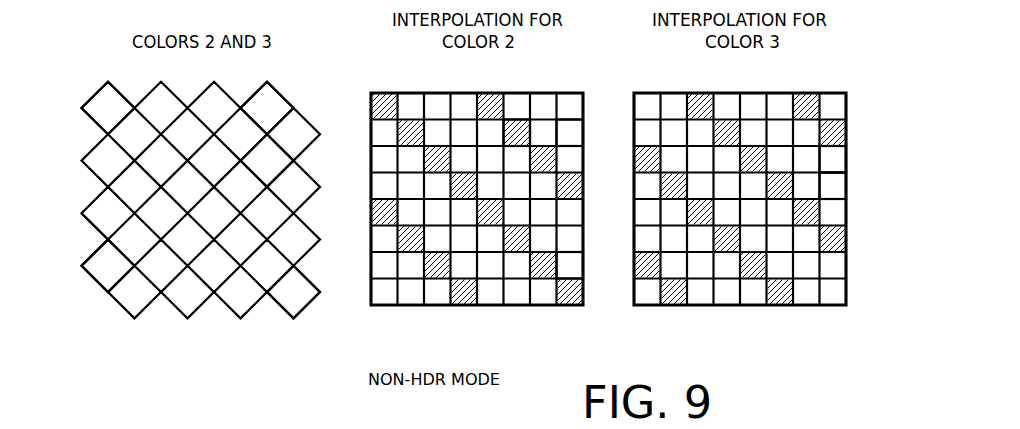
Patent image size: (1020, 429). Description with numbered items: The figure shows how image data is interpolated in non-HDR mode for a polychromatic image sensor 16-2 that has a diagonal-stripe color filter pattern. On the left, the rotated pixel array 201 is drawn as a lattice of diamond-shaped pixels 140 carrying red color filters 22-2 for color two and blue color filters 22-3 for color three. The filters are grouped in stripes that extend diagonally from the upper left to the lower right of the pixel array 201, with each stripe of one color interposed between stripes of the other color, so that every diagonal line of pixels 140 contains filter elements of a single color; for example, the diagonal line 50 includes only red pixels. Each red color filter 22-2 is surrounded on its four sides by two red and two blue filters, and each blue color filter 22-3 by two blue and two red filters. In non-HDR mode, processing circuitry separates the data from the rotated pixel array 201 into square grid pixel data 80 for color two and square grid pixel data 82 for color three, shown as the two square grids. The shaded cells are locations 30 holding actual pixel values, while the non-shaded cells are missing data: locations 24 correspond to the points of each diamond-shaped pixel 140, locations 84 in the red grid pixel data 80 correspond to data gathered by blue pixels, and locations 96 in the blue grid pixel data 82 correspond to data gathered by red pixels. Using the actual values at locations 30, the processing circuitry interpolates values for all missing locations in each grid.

The image sensor 16-2 is at (152, 328).
The diagonal line 50 is at (97, 96).
The pixel array 201 is at (283, 76).
The red color filter 22-2 is at (306, 178).
The blue color filter 22-3 is at (91, 280).
The pixels 140 is at (88, 250).
The square grid pixel data for color 2 80 is at (428, 325).
The square grid pixel data for color 3 82 is at (692, 325).
The locations of actual pixel values 30 is at (517, 132).
The missing red pixel value locations 84 is at (570, 133).
The missing pixel value locations 24 is at (570, 265).
The missing blue pixel value locations 96 is at (832, 159).